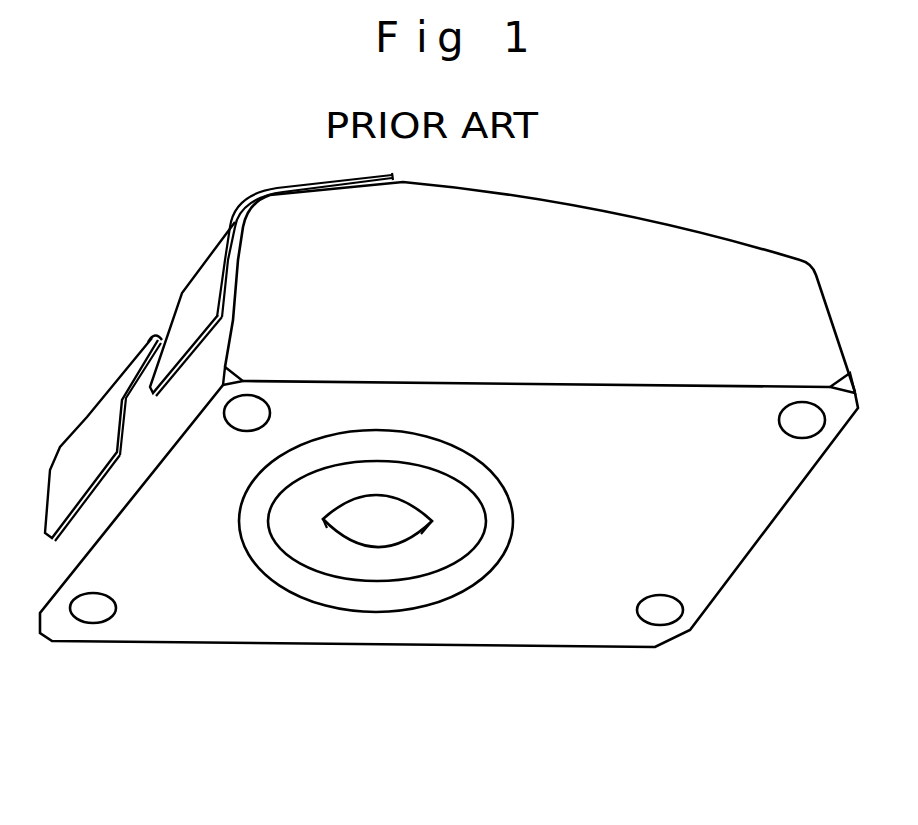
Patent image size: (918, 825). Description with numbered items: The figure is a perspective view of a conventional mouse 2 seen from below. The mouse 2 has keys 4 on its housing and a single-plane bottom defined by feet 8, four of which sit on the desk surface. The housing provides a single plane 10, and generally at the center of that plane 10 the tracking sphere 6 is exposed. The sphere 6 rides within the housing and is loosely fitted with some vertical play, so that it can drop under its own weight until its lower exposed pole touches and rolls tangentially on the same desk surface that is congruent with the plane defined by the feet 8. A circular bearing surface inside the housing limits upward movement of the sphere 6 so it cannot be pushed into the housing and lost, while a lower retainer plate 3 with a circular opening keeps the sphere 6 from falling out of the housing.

The mouse 2 is at (142, 195).
The lower retainer plate 3 is at (415, 560).
The keys 4 is at (192, 303).
The tracking sphere 6 is at (360, 533).
The feet 8 is at (660, 613).
The single plane 10 is at (566, 596).